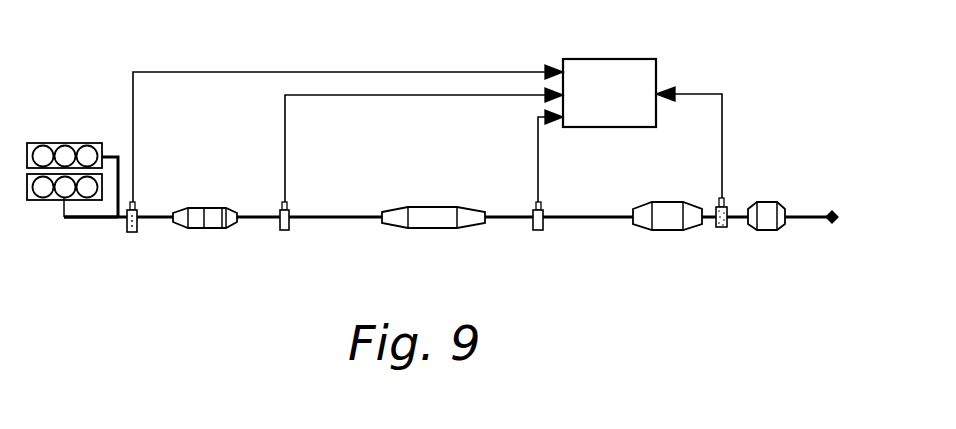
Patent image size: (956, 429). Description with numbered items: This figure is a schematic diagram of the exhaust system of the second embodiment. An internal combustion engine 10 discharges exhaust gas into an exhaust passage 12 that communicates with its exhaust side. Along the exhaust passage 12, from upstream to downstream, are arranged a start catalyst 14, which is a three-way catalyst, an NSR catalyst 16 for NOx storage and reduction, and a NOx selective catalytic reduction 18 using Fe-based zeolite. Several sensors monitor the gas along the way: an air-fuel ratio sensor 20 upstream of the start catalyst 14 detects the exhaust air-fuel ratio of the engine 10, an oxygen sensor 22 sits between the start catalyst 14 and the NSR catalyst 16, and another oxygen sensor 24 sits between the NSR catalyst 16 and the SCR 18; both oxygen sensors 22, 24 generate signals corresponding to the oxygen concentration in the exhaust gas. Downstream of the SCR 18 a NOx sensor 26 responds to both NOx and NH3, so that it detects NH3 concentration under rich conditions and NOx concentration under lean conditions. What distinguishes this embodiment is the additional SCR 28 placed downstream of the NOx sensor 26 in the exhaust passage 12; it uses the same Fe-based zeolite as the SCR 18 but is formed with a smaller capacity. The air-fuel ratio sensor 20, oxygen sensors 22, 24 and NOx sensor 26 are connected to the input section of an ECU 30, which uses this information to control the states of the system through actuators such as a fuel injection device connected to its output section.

The internal combustion engine 10 is at (73, 136).
The exhaust passage 12 is at (80, 220).
The start catalyst 14 is at (213, 212).
The NSR catalyst 16 is at (433, 211).
The NOx selective catalytic reduction 18 is at (660, 208).
The air-fuel ratio sensor 20 is at (138, 212).
The oxygen sensor 22 is at (290, 228).
The oxygen sensor 24 is at (546, 228).
The NOx sensor 26 is at (714, 226).
The SCR 28 is at (780, 229).
The ECU 30 is at (637, 59).